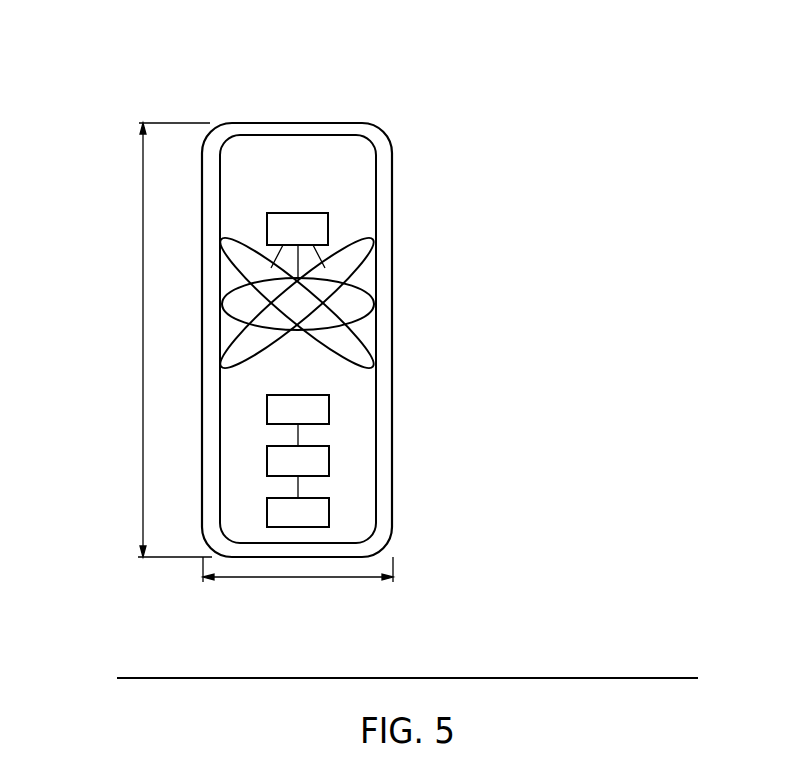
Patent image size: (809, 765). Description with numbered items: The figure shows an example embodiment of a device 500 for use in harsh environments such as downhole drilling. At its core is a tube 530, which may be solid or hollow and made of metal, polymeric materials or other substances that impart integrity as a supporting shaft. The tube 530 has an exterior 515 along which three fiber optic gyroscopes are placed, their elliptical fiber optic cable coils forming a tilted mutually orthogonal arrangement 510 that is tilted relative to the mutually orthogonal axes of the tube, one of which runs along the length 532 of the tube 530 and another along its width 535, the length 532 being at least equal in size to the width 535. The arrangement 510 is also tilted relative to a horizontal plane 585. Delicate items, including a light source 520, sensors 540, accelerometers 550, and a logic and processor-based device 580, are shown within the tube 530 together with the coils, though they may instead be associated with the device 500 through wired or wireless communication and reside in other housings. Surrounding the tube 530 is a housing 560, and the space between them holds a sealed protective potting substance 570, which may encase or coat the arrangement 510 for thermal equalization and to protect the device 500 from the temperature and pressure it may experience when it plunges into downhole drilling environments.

The device 500 is at (170, 90).
The tilted mutually orthogonal arrangement of elliptical fiber optic cable coils 510 is at (374, 286).
The exterior 515 is at (386, 341).
The light source 520 is at (329, 230).
The tube 530 is at (314, 135).
The length 532 is at (143, 333).
The width 535 is at (298, 578).
The sensors 540 is at (329, 410).
The accelerometers 550 is at (329, 460).
The housing 560 is at (392, 178).
The potting substance 570 is at (382, 140).
The logic and processor-based device 580 is at (329, 512).
The horizontal plane 585 is at (590, 677).